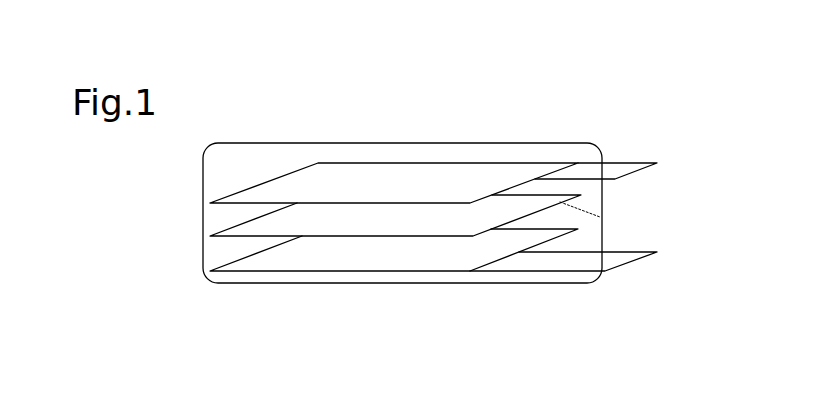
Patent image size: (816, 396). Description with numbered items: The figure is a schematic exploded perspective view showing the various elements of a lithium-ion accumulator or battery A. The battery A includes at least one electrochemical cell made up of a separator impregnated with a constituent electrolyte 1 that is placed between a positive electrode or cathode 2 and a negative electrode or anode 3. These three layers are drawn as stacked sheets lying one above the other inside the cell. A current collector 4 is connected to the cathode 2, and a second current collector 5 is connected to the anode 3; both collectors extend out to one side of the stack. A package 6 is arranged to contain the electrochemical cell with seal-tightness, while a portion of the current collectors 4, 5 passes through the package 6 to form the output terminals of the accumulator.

The separator impregnated with a constituent electrolyte 1 is at (601, 212).
The positive electrode or cathode 2 is at (412, 181).
The negative electrode or anode 3 is at (337, 252).
The current collector 4 is at (612, 161).
The current collector 5 is at (617, 262).
The package 6 is at (418, 284).
The lithium-ion accumulator or battery A is at (526, 124).